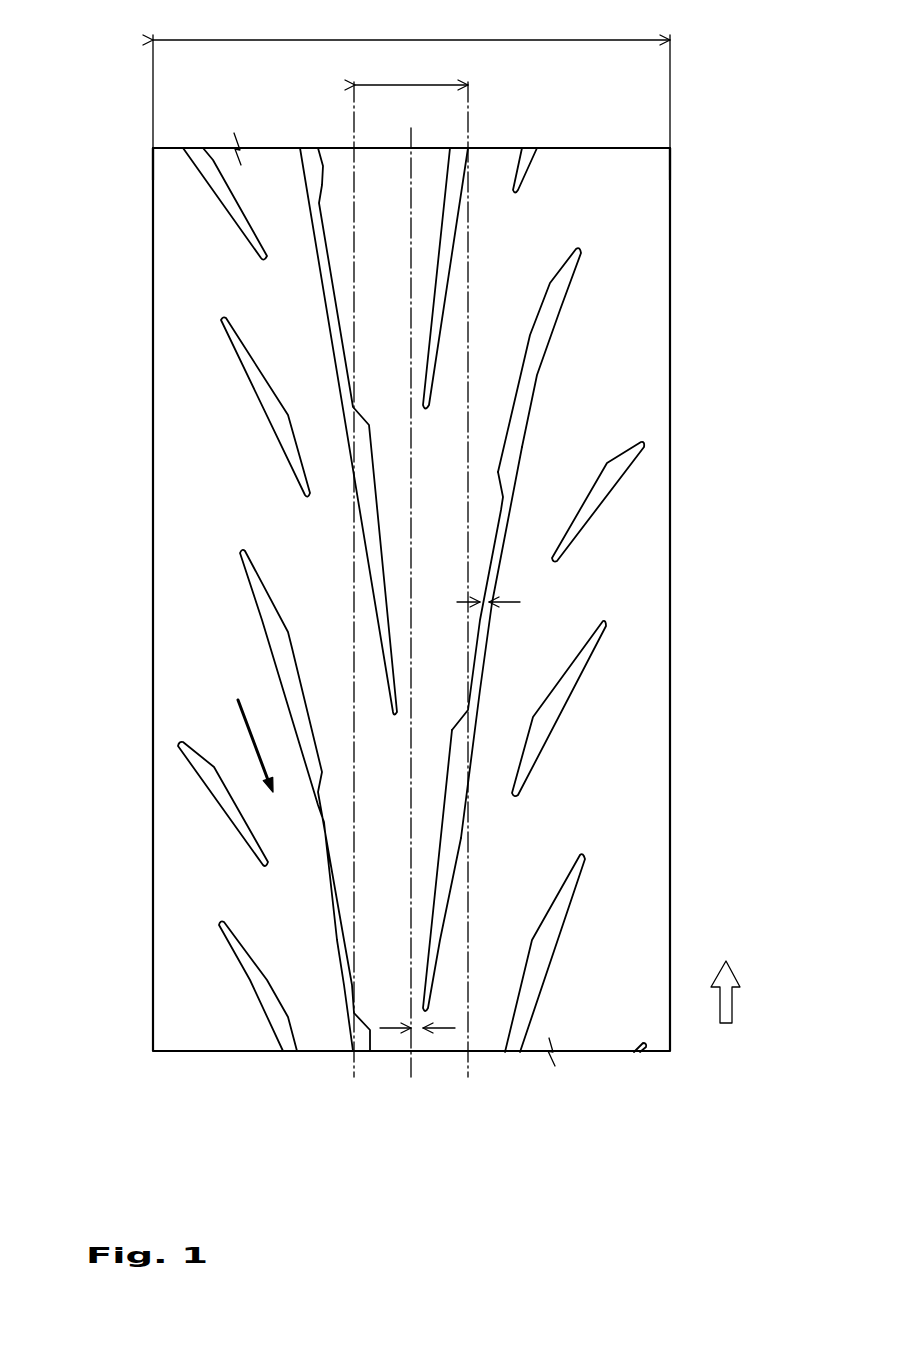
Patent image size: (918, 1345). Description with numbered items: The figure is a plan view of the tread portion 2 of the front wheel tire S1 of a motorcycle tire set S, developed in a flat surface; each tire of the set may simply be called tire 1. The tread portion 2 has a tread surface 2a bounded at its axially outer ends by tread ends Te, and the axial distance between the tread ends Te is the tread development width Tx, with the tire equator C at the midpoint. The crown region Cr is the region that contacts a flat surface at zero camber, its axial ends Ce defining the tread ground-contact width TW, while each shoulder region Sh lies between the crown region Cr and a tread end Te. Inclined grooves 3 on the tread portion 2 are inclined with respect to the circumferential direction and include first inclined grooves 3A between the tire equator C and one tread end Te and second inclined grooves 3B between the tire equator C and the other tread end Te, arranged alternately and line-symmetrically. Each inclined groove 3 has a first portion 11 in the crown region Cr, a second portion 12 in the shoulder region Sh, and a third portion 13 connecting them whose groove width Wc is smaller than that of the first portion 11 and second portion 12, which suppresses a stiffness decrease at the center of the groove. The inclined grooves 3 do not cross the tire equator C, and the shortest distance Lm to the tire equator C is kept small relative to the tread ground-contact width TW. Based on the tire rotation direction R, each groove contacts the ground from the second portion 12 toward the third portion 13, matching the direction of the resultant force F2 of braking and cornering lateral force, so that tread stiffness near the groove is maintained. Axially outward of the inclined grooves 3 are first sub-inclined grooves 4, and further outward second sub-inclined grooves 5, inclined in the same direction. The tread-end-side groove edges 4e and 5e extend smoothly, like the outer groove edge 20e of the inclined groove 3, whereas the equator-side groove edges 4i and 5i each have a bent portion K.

The tire 1 is at (424, 626).
The tread portion 2 is at (456, 599).
The tread surface 2a is at (197, 1004).
The inclined groove 3 is at (612, 283).
The first inclined groove 3A is at (567, 940).
The second inclined groove 3B is at (247, 616).
The first sub-inclined groove 4 is at (614, 718).
The groove edge on the tread end side of the first sub-inclined groove 4e is at (553, 713).
The groove edge on the tire equator side of the first sub-inclined groove 4i is at (512, 770).
The second sub-inclined groove 5 is at (641, 481).
The groove edge on the tire equator side of the second sub-inclined groove 5i is at (623, 447).
The groove edge on the tread end side of the second sub-inclined groove 5e is at (595, 508).
The first portion 11 is at (450, 840).
The second portion 12 is at (527, 383).
The third portion 13 is at (482, 642).
The outer groove edge 20e is at (323, 870).
The bent portion K is at (296, 405).
The tire equator C is at (411, 591).
The tread development width Tx is at (411, 83).
The tread ground-contact width TW is at (411, 570).
The tread end Te is at (153, 178).
The tire set S is at (735, 83).
The front wheel tire S1 is at (675, 129).
The groove width Wc is at (489, 599).
The shortest distance Lm is at (420, 1031).
The crown region Cr is at (425, 1062).
The end of the crown region Ce is at (353, 1030).
The shoulder region Sh is at (239, 1060).
The tire rotation direction R is at (725, 980).
The resultant force F2 is at (249, 735).